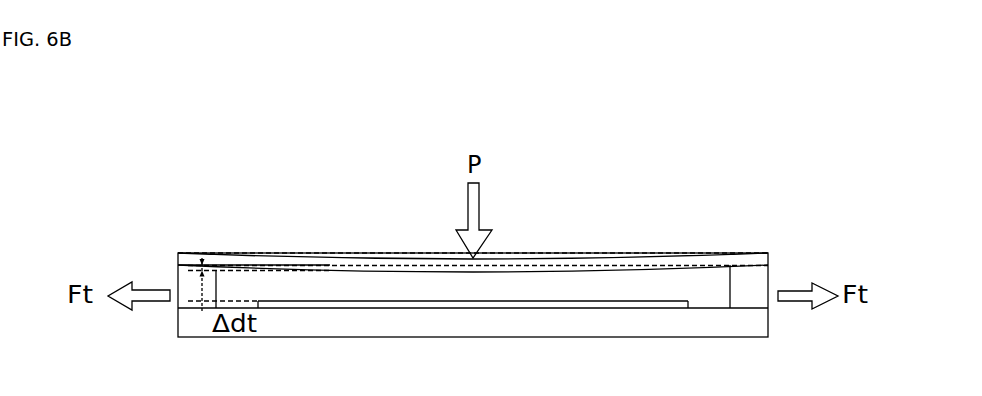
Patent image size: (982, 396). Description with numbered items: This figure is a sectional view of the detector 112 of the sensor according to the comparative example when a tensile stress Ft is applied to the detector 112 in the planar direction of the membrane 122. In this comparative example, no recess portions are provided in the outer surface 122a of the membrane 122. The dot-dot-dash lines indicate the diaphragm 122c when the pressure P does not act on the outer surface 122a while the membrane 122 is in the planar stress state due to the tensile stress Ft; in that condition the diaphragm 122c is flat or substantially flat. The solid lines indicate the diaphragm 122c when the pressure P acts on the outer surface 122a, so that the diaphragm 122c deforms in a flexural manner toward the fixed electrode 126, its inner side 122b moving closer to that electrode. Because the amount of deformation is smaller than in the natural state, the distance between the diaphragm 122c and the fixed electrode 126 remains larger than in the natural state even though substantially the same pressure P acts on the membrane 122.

The detector 112 is at (443, 256).
The membrane 122 is at (473, 248).
The outer surface 122a is at (643, 254).
The bottom surface of plate 122b is at (657, 269).
The diaphragm 122c is at (473, 262).
The fixed electrode 126 is at (472, 303).